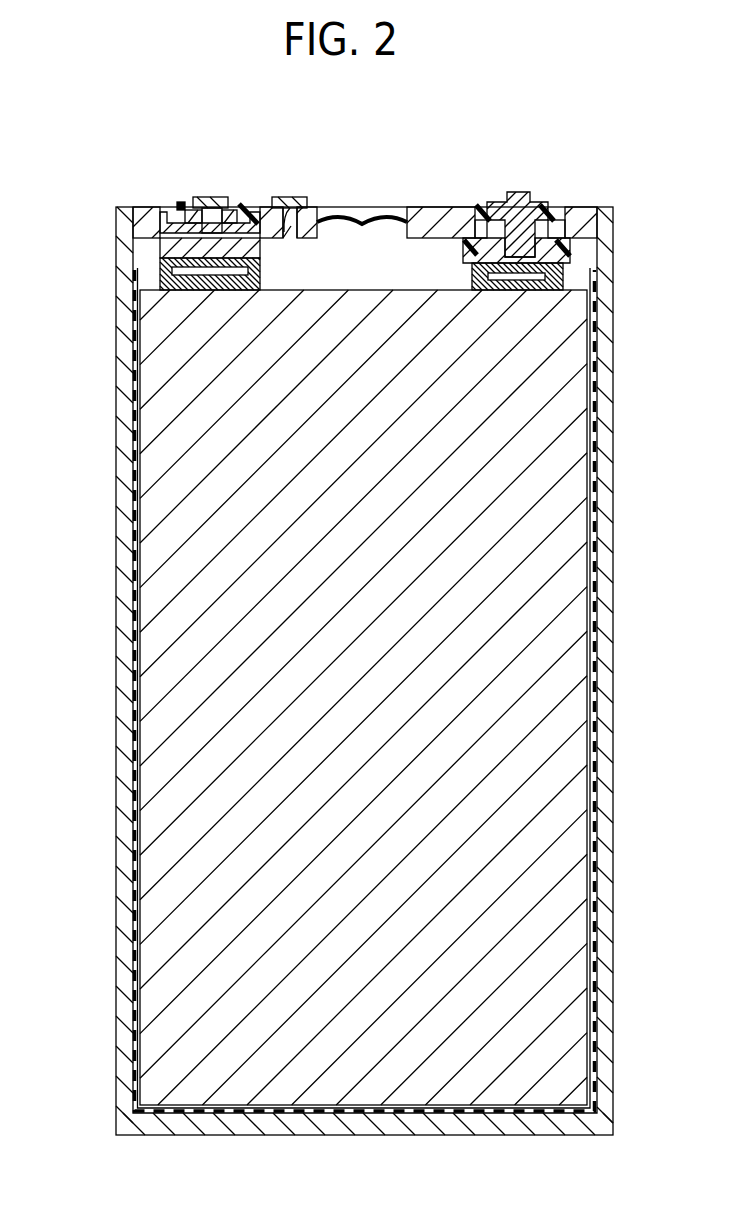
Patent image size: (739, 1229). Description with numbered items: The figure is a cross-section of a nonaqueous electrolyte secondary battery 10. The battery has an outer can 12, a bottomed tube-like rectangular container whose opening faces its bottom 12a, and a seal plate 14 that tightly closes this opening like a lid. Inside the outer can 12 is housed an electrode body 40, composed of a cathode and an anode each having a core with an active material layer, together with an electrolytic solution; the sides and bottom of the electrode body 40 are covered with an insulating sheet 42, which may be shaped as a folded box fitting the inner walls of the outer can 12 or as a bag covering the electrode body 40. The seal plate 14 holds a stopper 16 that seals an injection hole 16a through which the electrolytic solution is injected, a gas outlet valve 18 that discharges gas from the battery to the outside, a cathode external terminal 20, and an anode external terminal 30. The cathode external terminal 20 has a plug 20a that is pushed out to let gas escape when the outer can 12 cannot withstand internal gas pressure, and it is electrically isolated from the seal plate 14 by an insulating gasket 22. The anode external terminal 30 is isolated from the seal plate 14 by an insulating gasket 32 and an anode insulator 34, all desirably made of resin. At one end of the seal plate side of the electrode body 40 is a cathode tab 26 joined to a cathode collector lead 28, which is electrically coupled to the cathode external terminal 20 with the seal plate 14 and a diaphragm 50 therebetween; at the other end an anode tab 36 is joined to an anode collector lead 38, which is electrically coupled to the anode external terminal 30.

The nonaqueous electrolyte secondary battery 10 is at (620, 116).
The outer can 12 is at (122, 818).
The bottom 12a is at (372, 1137).
The seal plate 14 is at (452, 220).
The stopper 16 is at (278, 196).
The injection hole 16a is at (300, 193).
The gas outlet valve 18 is at (383, 218).
The cathode external terminal 20 is at (200, 205).
The plug 20a is at (210, 198).
The insulating gasket 22 is at (180, 202).
The cathode tab 26 is at (168, 280).
The cathode collector lead 28 is at (170, 245).
The anode external terminal 30 is at (513, 197).
The insulating gasket 32 is at (552, 200).
The anode insulator 34 is at (588, 243).
The anode tab 36 is at (563, 282).
The anode collector lead 38 is at (567, 265).
The electrode body 40 is at (180, 615).
The insulating sheet 42 is at (133, 1045).
The diaphragm 50 is at (235, 205).